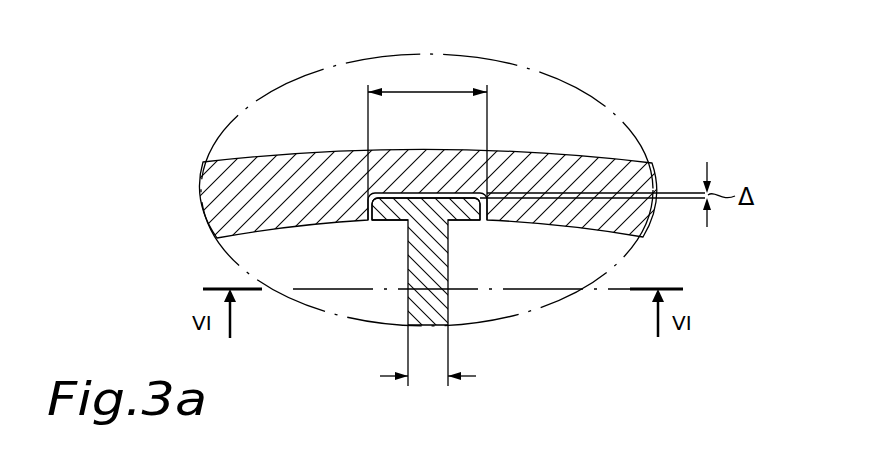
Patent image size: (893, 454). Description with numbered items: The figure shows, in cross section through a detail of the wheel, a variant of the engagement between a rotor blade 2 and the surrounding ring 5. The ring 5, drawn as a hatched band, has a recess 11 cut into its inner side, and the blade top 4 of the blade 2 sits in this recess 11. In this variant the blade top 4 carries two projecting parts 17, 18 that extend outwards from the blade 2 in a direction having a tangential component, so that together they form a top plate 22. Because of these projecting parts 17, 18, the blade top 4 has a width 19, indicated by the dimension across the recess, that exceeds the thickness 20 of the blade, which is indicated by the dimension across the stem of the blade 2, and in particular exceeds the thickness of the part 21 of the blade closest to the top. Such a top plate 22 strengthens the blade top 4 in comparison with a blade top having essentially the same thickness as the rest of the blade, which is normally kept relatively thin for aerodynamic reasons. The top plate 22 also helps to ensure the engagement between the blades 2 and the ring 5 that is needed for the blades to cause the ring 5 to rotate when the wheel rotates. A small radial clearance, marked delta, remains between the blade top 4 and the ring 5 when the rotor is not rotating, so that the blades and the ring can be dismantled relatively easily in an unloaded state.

The blade 2 is at (448, 300).
The blade top 4 is at (412, 200).
The ring 5 is at (283, 168).
The recess 11 is at (441, 196).
The projecting part 17 is at (375, 222).
The projecting part 18 is at (480, 220).
The width of the blade top 19 is at (412, 92).
The thickness of the blade 20 is at (428, 376).
The part of the blade closest to the top 21 is at (412, 230).
The top plate 22 is at (457, 220).